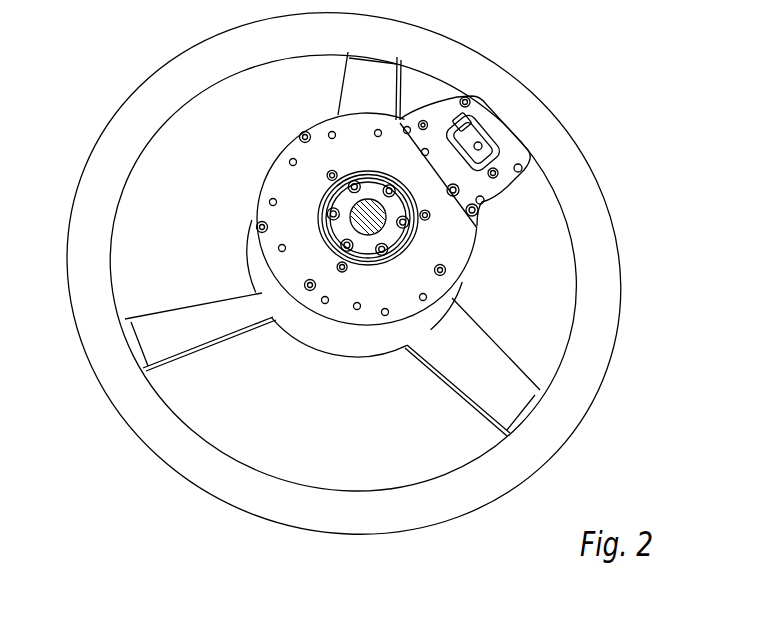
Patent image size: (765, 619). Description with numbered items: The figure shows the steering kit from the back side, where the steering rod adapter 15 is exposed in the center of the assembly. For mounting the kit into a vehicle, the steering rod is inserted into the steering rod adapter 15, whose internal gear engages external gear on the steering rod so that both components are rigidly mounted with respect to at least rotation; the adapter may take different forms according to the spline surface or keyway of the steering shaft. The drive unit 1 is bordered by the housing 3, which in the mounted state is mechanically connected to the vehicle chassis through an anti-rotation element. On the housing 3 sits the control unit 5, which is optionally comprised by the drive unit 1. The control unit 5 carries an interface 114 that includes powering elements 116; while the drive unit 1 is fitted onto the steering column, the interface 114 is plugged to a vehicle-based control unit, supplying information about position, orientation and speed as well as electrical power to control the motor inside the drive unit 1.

The drive unit 1 is at (346, 391).
The housing 3 is at (297, 148).
The control unit 5 is at (505, 155).
The steering rod adapter 15 is at (340, 229).
The interface 114 is at (455, 114).
The powering elements 116 is at (478, 143).